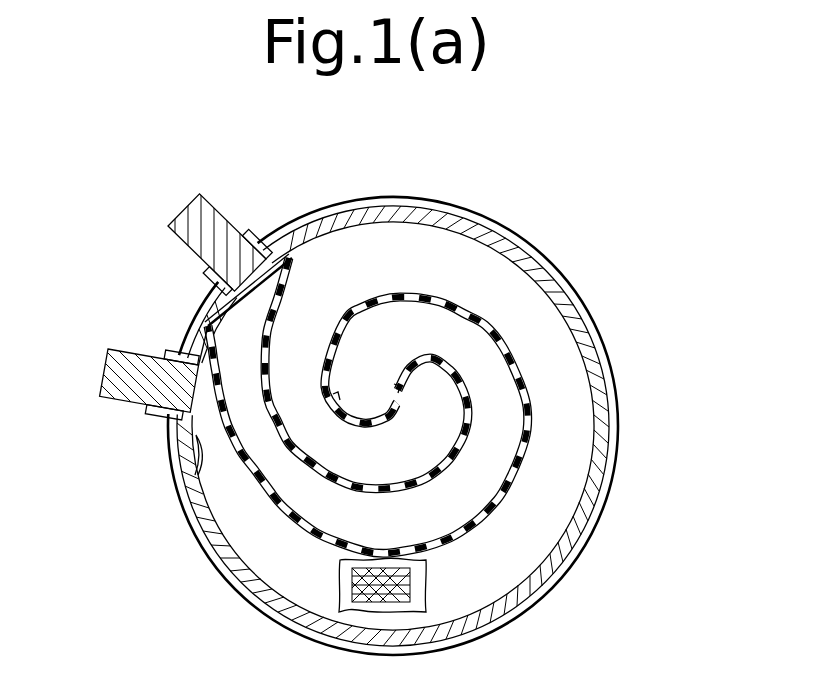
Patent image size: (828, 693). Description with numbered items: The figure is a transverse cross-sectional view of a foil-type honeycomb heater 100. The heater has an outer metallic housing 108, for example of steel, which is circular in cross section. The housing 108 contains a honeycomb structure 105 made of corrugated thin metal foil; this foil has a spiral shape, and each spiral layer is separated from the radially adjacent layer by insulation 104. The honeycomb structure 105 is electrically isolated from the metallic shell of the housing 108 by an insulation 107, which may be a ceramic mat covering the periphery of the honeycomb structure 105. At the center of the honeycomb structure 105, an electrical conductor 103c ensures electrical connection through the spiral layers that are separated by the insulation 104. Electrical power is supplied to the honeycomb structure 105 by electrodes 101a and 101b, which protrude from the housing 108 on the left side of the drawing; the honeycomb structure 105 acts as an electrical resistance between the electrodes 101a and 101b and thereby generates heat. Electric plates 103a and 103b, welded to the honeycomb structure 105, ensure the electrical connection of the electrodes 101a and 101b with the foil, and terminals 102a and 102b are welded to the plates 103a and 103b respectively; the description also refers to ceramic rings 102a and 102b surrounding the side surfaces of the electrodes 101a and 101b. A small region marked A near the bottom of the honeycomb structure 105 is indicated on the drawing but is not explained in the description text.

The honeycomb heater 100 is at (438, 393).
The electrode 101a is at (196, 233).
The electrode 101b is at (123, 383).
The terminal 102a is at (253, 230).
The terminal 102b is at (170, 422).
The electric plate 103a is at (227, 311).
The electric plate 103b is at (196, 470).
The electrical conductor 103c is at (365, 413).
The insulation 104 is at (447, 297).
The honeycomb structure 105 is at (525, 296).
The insulation 107 is at (332, 207).
The outer metallic housing 108 is at (615, 480).
The detail region A is at (428, 576).